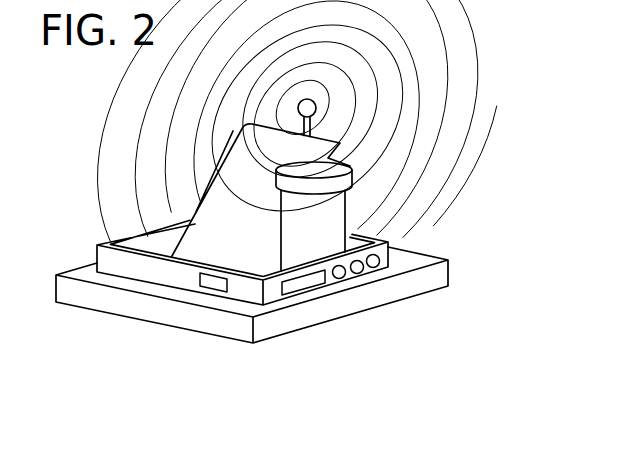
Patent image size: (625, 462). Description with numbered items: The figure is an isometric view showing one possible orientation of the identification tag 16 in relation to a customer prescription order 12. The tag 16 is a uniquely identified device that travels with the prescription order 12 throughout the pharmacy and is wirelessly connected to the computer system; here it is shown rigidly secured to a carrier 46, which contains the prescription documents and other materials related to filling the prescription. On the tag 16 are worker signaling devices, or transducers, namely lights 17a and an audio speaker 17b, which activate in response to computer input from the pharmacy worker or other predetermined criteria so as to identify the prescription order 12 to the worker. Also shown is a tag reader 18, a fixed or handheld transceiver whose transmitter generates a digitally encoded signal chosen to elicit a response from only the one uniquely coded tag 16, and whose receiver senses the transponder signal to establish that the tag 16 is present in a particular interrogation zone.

The prescription order 12 is at (337, 202).
The identification tag 16 is at (303, 283).
The lights 17a is at (338, 280).
The audio speaker 17b is at (212, 283).
The tag reader 18 is at (307, 108).
The carrier 46 is at (392, 254).